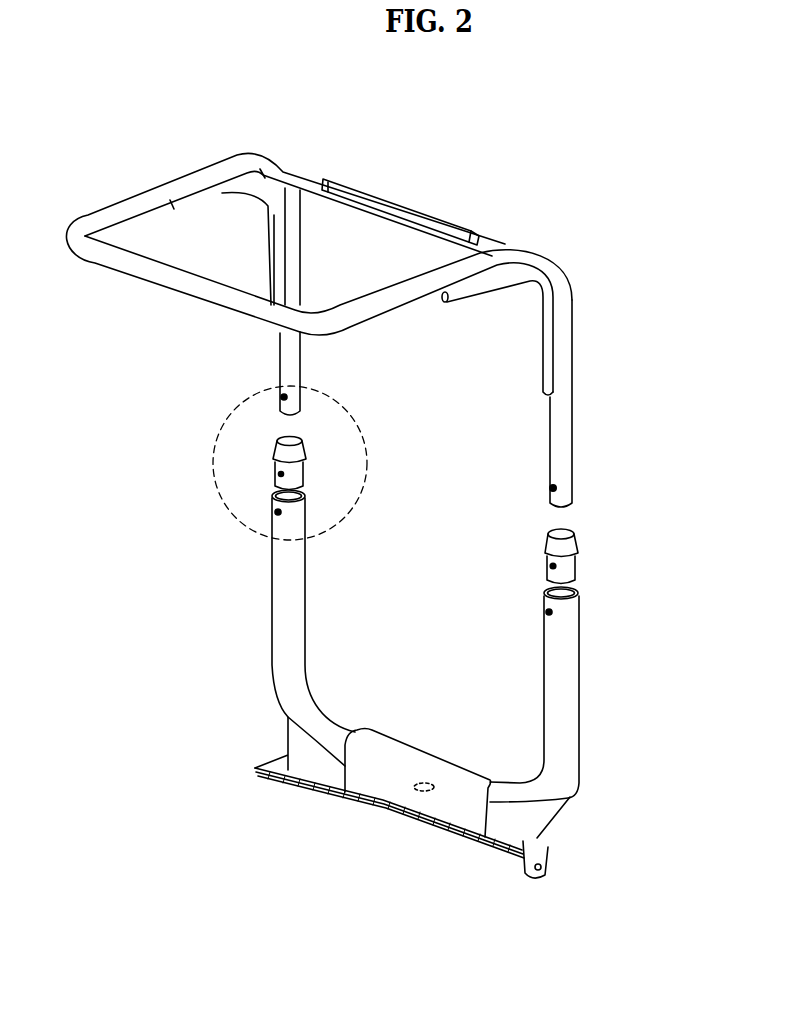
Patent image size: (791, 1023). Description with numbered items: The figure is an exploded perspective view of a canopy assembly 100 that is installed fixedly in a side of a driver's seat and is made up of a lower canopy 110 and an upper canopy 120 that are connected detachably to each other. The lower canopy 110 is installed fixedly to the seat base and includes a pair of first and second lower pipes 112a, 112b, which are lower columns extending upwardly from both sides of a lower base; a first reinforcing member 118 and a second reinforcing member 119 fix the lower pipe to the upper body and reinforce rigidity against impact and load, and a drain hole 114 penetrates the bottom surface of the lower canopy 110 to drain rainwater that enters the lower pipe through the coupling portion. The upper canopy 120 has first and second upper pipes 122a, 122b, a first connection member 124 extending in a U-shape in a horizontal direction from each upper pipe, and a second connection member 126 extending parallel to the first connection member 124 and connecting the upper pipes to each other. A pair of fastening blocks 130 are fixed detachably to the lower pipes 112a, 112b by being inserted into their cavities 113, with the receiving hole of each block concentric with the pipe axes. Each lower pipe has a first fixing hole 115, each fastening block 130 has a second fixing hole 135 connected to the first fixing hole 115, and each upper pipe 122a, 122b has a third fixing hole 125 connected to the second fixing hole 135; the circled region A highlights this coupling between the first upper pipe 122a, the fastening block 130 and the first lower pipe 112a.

The canopy assembly 100 is at (383, 116).
The upper canopy 120 is at (583, 289).
The first connection member 124 is at (127, 263).
The second connection member 126 is at (437, 220).
The first upper pipe 122a is at (280, 368).
The second upper pipe 122b is at (567, 438).
The third fixing hole 125 is at (557, 488).
The detail region A is at (230, 413).
The fastening block 130 is at (273, 446).
The second fixing hole 135 is at (558, 565).
The lower canopy 110 is at (587, 777).
The first lower pipe 112a is at (285, 568).
The second lower pipe 112b is at (565, 657).
The cavity 113 is at (557, 590).
The first fixing hole 115 is at (557, 609).
The drain hole 114 is at (423, 780).
The first reinforcing member 118 is at (297, 748).
The second reinforcing member 119 is at (543, 816).